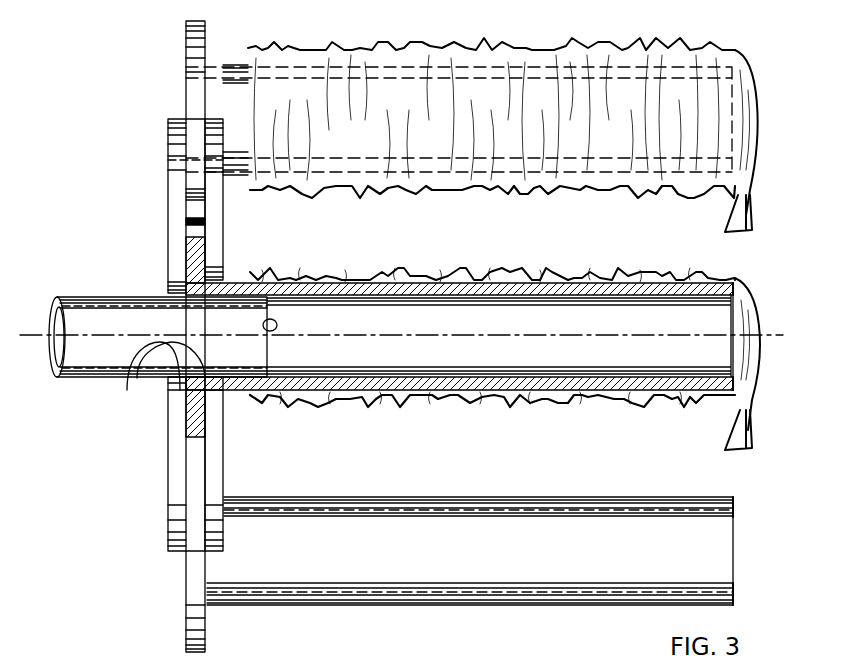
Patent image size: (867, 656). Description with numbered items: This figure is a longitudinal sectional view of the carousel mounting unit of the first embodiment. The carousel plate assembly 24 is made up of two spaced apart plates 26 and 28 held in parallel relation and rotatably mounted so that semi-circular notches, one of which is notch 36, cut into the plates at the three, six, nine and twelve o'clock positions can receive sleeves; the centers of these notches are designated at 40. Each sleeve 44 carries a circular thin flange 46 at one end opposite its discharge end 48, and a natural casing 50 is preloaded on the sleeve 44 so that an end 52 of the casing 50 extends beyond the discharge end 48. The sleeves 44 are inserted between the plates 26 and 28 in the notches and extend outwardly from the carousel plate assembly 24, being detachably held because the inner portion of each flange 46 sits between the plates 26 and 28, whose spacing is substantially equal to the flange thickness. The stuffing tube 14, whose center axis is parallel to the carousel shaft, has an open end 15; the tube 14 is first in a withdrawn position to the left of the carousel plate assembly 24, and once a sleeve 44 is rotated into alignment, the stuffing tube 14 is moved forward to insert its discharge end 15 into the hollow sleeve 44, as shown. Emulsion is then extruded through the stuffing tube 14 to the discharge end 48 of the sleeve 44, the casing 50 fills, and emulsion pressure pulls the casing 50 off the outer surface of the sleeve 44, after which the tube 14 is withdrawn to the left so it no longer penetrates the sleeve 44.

The stuffing tube 14 is at (100, 292).
The open end 15 is at (262, 325).
The carousel plate assembly 24 is at (147, 313).
The plate 26 is at (176, 157).
The plate 28 is at (212, 148).
The semi-circular notch 36 is at (132, 380).
The centers of the semi-circular notches 40 is at (770, 335).
The sleeve 44 is at (655, 50).
The circular thin flange 46 is at (200, 262).
The discharge end 48 is at (732, 147).
The casing 50 is at (388, 186).
The end of the casing 52 is at (745, 195).